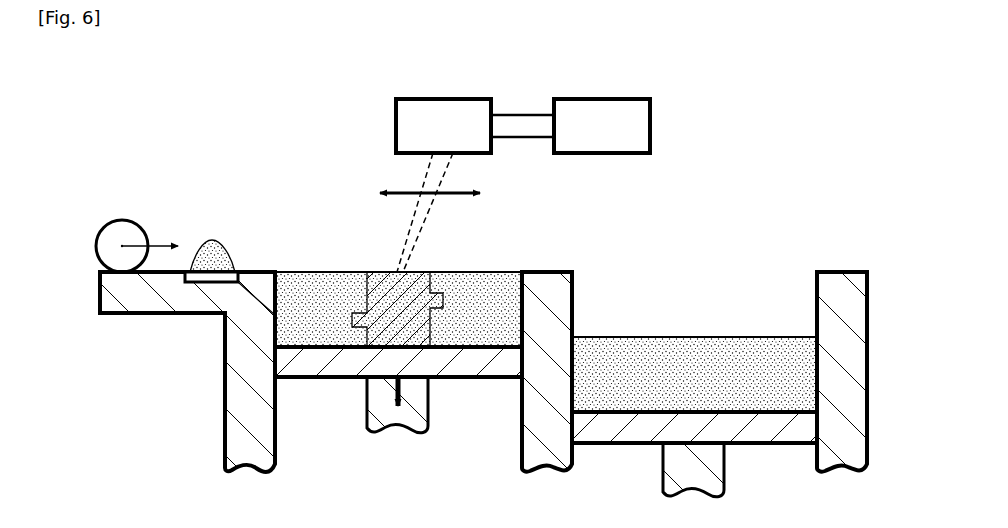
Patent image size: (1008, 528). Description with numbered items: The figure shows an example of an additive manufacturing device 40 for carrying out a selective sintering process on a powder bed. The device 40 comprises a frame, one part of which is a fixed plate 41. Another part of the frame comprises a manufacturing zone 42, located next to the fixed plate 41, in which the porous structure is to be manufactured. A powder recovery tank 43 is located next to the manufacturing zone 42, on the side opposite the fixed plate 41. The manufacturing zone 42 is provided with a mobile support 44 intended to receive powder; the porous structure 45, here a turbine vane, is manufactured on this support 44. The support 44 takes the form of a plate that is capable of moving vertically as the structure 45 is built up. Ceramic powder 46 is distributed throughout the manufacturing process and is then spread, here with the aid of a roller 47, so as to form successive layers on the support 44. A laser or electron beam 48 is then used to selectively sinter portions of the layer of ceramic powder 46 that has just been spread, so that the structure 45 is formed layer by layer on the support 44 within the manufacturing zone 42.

The device 40 is at (706, 173).
The fixed plate 41 is at (141, 295).
The manufacturing zone 42 is at (484, 275).
The powder recovery tank 43 is at (694, 352).
The mobile support 44 is at (473, 370).
The porous structure 45 is at (392, 280).
The ceramic powder 46 is at (220, 241).
The roller 47 is at (95, 244).
The laser beam 48 is at (447, 166).